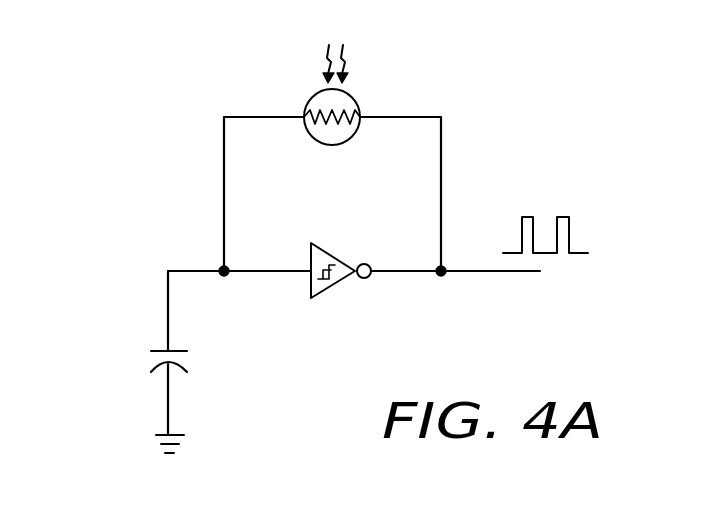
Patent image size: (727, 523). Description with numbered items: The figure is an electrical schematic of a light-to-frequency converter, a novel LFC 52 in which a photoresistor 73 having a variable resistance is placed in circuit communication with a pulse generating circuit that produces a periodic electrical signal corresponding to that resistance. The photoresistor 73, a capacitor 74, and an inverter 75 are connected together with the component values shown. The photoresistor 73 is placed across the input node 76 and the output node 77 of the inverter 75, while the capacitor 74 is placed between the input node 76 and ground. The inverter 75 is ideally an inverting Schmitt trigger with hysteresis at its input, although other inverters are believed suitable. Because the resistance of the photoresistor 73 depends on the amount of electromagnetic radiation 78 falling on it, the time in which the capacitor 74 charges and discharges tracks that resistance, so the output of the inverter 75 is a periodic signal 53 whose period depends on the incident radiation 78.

The LFC 52 is at (150, 220).
The output signal 53 is at (493, 272).
The photoresistor 73 is at (350, 148).
The capacitor 74 is at (162, 347).
The inverter 75 is at (330, 252).
The input node 76 is at (228, 194).
The output node 77 is at (441, 185).
The electromagnetic radiation 78 is at (337, 45).